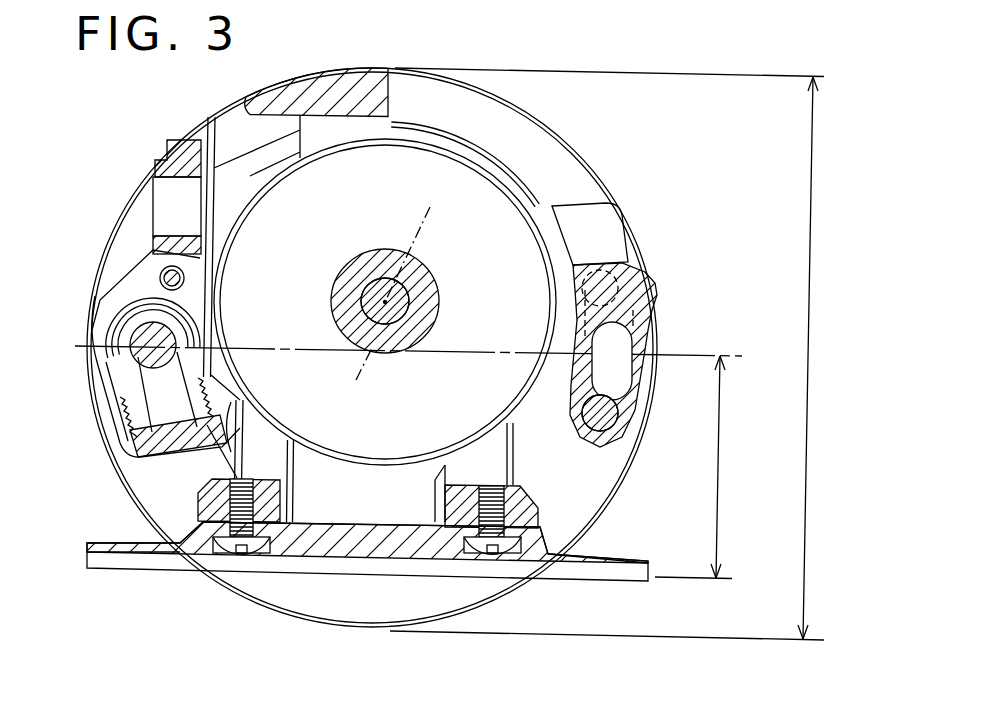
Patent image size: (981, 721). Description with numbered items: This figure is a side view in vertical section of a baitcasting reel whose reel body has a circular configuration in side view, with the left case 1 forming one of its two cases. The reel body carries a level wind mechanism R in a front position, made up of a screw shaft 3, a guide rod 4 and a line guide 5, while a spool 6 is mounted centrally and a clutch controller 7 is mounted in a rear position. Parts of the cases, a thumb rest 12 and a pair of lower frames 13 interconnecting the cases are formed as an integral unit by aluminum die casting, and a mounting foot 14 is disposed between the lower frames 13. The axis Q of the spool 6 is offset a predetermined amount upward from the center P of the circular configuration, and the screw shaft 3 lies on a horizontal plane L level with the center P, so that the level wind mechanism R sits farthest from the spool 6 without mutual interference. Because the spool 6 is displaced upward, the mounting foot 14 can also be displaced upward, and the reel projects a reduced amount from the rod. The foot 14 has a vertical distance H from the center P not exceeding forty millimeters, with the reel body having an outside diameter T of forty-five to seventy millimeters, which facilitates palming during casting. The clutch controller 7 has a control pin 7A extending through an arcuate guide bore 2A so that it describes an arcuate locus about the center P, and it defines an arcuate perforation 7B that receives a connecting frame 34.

The left case 1 is at (574, 142).
The arcuate guide bore 2A is at (590, 373).
The screw shaft 3 is at (138, 340).
The guide rod 4 is at (163, 281).
The line guide 5 is at (160, 168).
The spool 6 is at (430, 297).
The clutch controller 7 is at (658, 284).
The control pin 7A is at (650, 283).
The arcuate perforation 7B is at (622, 377).
The thumb rest 12 is at (324, 82).
The lower frames 13 is at (203, 493).
The mounting foot 14 is at (350, 545).
The connecting frame 34 is at (618, 424).
The level wind mechanism R is at (108, 403).
The horizontal plane L is at (419, 355).
The outside diameter T is at (614, 354).
The vertical distance H is at (702, 467).
The center P is at (353, 380).
The axis Q is at (417, 238).